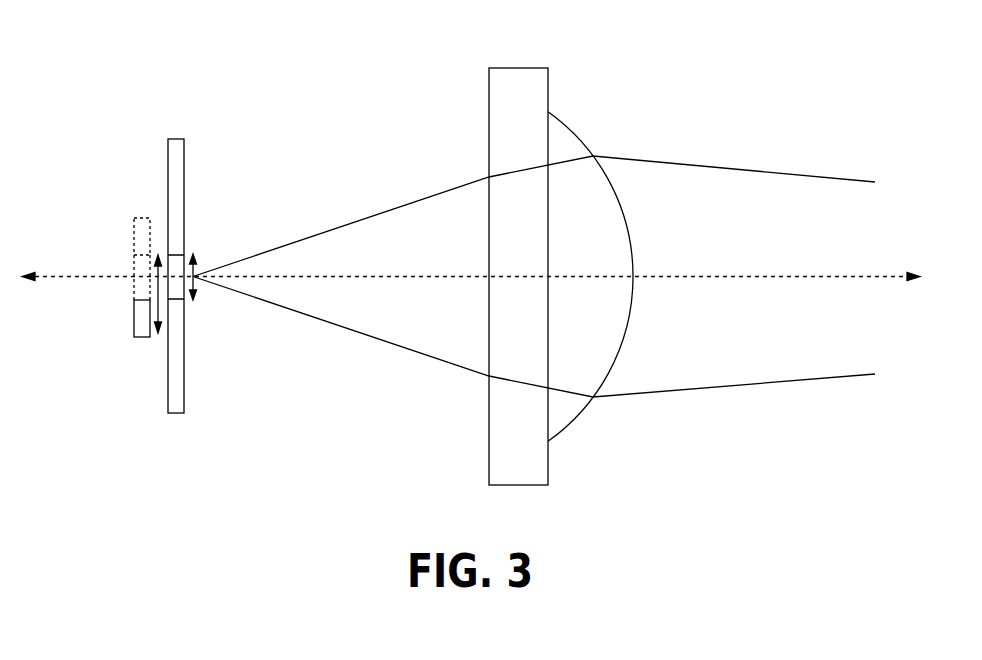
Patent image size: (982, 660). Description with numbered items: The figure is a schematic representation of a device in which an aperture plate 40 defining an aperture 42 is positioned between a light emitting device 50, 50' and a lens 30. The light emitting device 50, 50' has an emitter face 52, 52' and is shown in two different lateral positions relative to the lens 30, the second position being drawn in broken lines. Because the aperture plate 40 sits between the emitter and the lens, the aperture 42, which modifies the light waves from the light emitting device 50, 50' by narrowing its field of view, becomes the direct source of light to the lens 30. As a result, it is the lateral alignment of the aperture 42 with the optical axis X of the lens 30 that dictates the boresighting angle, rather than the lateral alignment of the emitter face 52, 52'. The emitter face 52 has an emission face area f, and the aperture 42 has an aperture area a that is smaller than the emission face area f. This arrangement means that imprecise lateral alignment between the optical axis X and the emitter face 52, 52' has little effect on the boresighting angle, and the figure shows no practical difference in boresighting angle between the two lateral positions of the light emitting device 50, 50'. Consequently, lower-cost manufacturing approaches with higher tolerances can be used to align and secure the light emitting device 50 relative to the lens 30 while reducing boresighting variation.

The lens 30 is at (507, 415).
The aperture plate 40 is at (184, 388).
The aperture 42 is at (184, 256).
The light emitting device 50 is at (118, 338).
The light emitting device 50' is at (121, 236).
The emitter face 52 is at (154, 347).
The emitter face 52' is at (140, 174).
The aperture area a is at (195, 283).
The emission face area f is at (155, 283).
The optical axis X is at (463, 276).